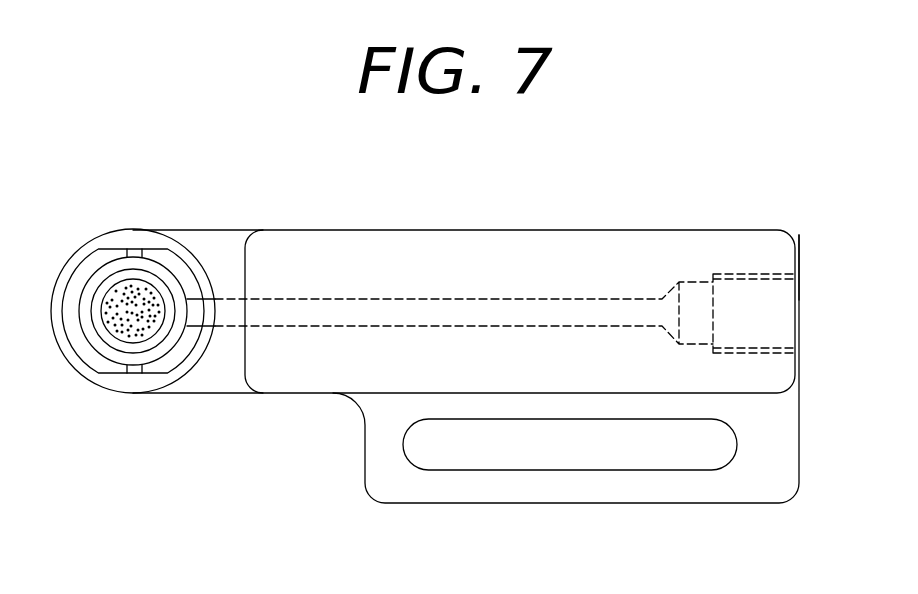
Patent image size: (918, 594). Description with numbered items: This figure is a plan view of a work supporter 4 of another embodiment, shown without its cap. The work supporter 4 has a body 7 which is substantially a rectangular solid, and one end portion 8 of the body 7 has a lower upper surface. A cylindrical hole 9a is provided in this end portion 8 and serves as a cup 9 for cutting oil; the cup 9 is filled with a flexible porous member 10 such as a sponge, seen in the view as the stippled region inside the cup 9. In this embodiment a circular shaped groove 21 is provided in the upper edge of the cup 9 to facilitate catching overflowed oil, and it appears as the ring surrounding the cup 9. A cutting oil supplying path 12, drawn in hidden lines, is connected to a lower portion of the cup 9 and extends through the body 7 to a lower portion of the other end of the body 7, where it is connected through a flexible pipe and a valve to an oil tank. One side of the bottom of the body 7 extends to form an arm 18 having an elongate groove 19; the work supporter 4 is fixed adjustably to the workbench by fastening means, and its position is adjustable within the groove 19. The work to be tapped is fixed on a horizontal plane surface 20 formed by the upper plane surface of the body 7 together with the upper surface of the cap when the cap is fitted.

The work supporter 4 is at (632, 187).
The body 7 is at (790, 230).
The end portion 8 is at (224, 246).
The cup 9 is at (88, 392).
The cylindrical hole 9a is at (144, 298).
The flexible porous member 10 is at (153, 320).
The cutting oil supplying path 12 is at (367, 310).
The arm 18 is at (617, 487).
The elongate groove 19 is at (463, 452).
The horizontal plane surface 20 is at (498, 270).
The circular shaped groove 21 is at (105, 275).